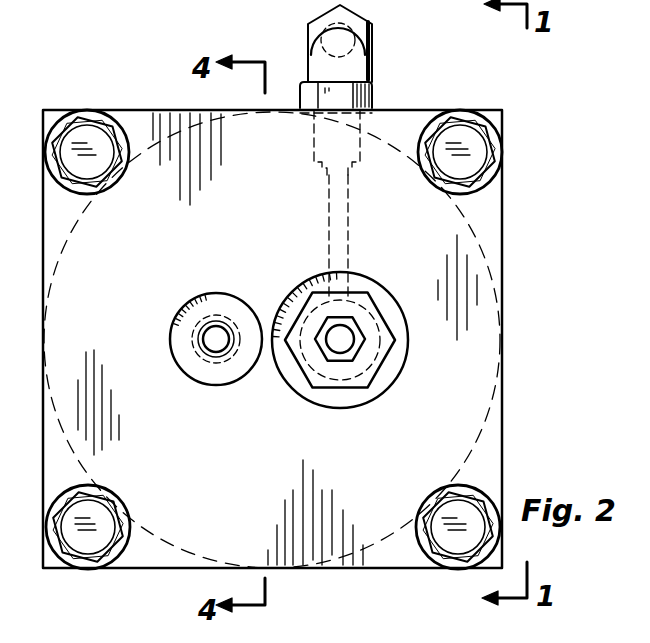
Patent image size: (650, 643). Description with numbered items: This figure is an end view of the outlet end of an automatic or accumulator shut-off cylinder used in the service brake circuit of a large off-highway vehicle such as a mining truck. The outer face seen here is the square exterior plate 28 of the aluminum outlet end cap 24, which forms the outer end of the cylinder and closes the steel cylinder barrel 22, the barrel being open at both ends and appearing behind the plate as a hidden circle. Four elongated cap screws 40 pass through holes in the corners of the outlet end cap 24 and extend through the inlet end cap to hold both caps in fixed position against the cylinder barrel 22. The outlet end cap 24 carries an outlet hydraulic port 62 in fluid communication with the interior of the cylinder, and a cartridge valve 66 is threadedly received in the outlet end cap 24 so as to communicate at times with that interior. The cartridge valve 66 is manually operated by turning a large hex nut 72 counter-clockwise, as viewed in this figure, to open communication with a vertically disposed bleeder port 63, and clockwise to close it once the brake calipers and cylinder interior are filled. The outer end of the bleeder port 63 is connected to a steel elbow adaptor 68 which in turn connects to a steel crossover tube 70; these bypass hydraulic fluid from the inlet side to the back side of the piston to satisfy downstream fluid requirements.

The cylinder barrel 22 is at (478, 256).
The outlet end cap 24 is at (485, 455).
The square exterior plate 28 is at (497, 393).
The cap screws 40 is at (480, 153).
The outlet hydraulic port 62 is at (197, 340).
The bleeder port 63 is at (330, 230).
The cartridge valve 66 is at (345, 313).
The elbow adaptor 68 is at (350, 70).
The crossover tube 70 is at (358, 42).
The hex nut 72 is at (375, 357).